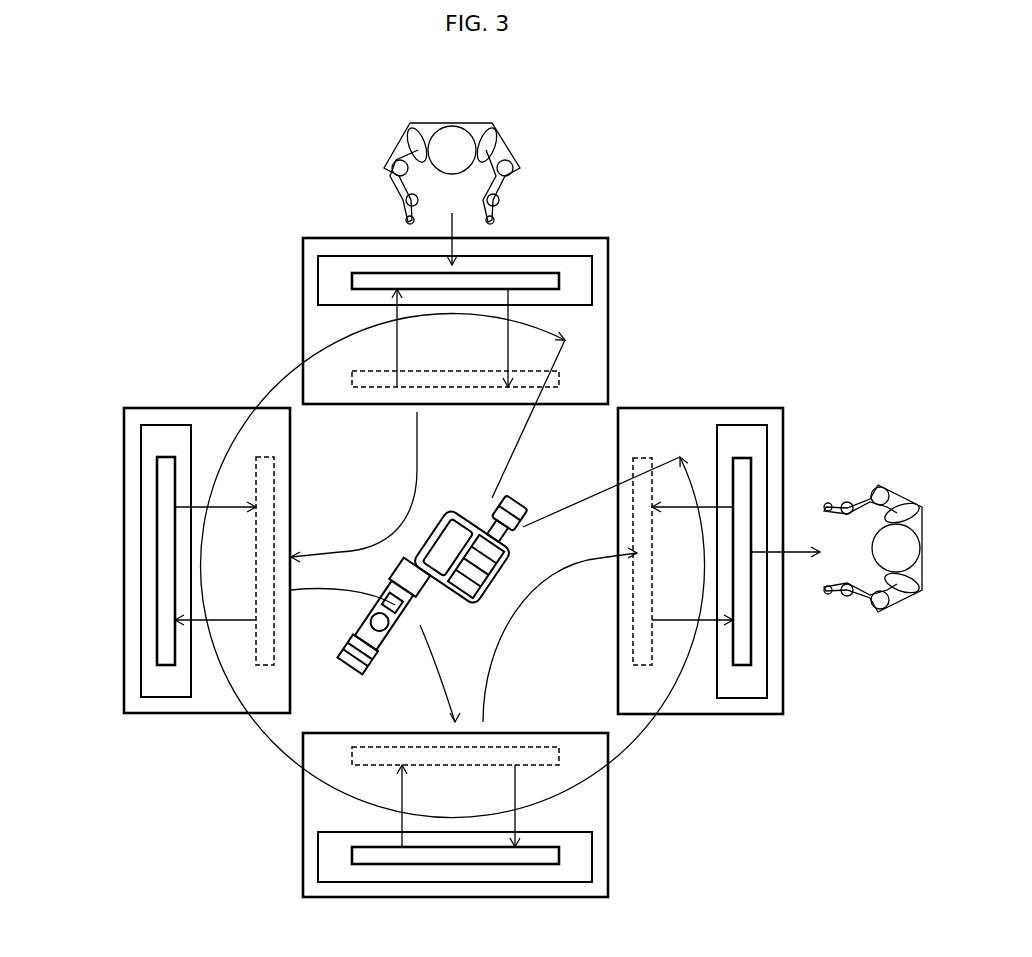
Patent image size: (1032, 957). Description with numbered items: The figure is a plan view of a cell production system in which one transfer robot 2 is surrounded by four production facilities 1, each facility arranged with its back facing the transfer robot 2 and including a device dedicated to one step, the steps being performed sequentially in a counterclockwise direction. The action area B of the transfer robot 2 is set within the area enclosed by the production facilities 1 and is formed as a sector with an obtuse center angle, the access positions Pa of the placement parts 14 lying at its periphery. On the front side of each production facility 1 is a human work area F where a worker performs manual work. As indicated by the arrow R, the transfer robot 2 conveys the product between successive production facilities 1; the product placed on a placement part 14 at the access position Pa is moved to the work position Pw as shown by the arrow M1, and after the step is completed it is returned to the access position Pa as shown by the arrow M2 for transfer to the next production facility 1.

The production facility 1 is at (600, 339).
The transfer robot 2 is at (405, 640).
The placement part 14 is at (547, 282).
The human work area F is at (355, 207).
The arrow R is at (453, 566).
The action area B is at (591, 552).
The arrow M1 is at (454, 568).
The arrow M2 is at (454, 568).